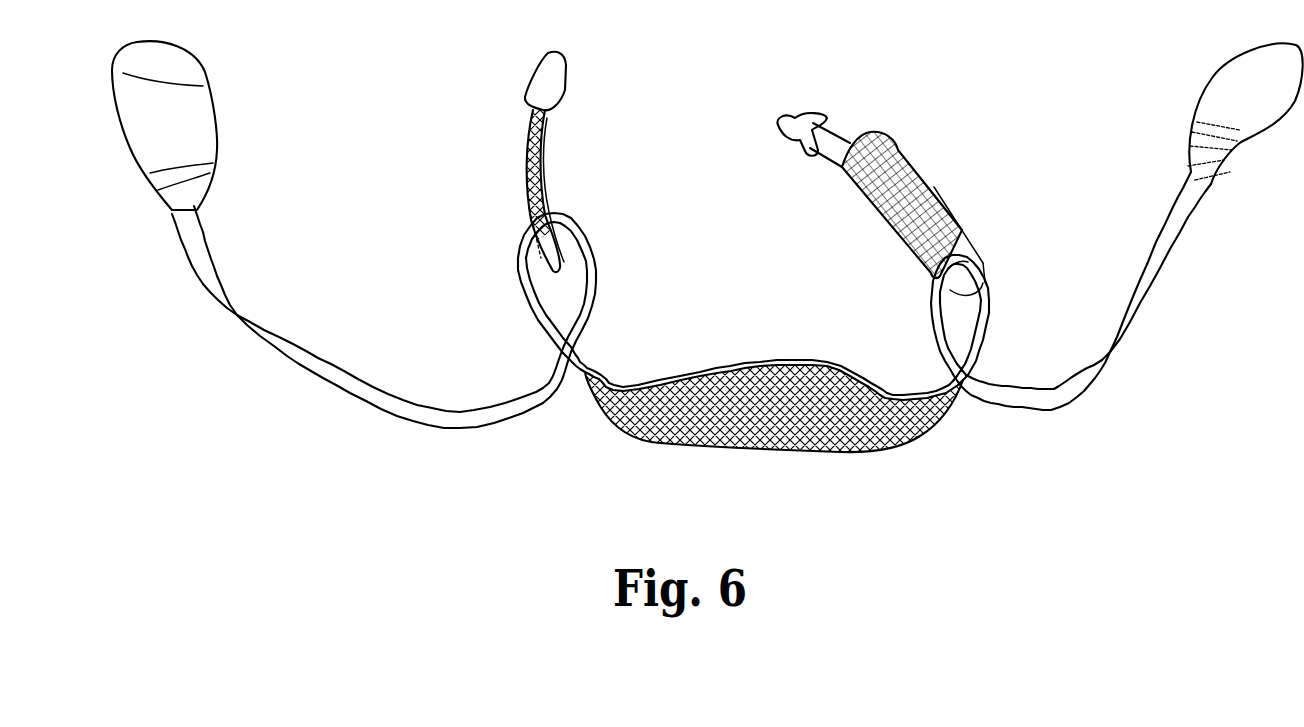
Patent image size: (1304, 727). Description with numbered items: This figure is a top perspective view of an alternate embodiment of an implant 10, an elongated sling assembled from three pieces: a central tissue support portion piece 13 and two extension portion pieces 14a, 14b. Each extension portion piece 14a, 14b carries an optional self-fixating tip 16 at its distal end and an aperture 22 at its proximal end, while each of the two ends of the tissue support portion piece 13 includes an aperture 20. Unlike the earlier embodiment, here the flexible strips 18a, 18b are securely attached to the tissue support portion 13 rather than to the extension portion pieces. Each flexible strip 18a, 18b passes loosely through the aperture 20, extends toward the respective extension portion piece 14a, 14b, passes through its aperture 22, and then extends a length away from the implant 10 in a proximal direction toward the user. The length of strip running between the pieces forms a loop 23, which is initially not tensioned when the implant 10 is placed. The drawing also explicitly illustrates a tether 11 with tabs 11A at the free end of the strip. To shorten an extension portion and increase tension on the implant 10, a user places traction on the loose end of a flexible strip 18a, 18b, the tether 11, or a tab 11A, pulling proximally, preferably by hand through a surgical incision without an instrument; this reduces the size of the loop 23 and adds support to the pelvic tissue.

The implant 10 is at (380, 73).
The tether 11 is at (262, 366).
The tab 11A is at (176, 70).
The tissue support portion piece 13 is at (715, 362).
The extension portion piece 14a is at (905, 152).
The extension portion piece 14b is at (527, 160).
The self-fixating tip 16 is at (538, 55).
The flexible strip 18a is at (1030, 383).
The flexible strip 18b is at (541, 388).
The aperture 20 is at (563, 352).
The aperture 22 is at (522, 220).
The loop 23 is at (516, 288).